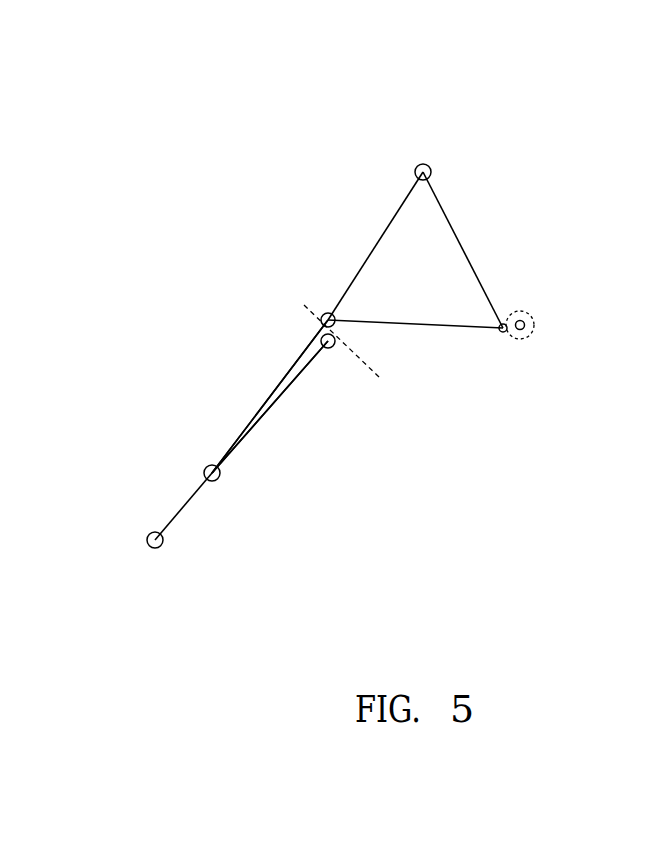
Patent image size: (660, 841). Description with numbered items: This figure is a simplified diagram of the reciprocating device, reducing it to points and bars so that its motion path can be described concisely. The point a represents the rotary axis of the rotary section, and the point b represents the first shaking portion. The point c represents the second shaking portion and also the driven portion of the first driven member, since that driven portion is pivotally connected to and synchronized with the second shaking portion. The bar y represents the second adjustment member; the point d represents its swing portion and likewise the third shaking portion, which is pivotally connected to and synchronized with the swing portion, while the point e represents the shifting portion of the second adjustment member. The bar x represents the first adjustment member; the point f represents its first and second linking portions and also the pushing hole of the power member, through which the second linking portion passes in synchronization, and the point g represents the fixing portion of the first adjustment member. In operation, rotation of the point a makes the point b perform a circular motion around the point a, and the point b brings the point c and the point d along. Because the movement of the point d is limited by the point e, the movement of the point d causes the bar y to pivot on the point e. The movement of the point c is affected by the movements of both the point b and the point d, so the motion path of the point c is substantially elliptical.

The point a is at (522, 320).
The point b is at (504, 333).
The point c is at (428, 163).
The point d is at (323, 314).
The point e is at (205, 466).
The point f is at (148, 533).
The point g is at (332, 348).
The bar x is at (262, 418).
The bar y is at (287, 377).